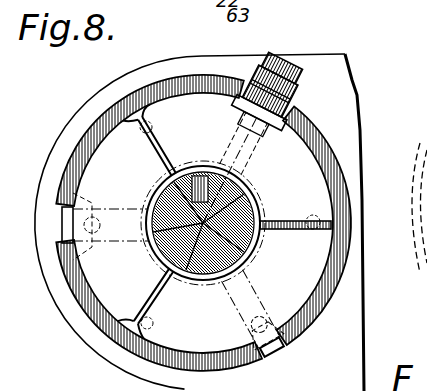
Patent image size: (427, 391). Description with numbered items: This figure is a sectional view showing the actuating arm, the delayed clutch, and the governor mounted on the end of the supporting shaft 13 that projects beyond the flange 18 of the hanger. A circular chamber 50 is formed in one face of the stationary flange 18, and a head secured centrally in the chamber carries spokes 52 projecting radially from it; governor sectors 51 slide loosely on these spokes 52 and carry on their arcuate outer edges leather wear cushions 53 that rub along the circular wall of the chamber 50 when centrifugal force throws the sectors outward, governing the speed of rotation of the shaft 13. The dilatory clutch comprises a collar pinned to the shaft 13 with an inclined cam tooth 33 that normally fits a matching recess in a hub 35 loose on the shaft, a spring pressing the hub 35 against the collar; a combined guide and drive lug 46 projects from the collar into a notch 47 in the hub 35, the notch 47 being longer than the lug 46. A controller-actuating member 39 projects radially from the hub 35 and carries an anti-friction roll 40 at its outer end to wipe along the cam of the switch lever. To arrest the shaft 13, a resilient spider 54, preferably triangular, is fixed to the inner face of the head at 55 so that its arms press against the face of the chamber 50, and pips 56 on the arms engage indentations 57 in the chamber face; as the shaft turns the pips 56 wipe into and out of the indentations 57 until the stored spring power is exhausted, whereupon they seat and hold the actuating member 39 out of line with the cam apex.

The flange 18 is at (360, 90).
The circular chamber 50 is at (348, 208).
The anti-friction roll 40 is at (303, 100).
The governor sectors 51 is at (161, 222).
The indentations 57 is at (314, 229).
The controller-actuating member 39 is at (302, 208).
The fastening of the spider 55 is at (160, 196).
The hub 35 is at (252, 236).
The supporting shaft 13 is at (157, 260).
The combined guide and drive lug 46 is at (233, 184).
The cam tooth 33 is at (186, 280).
The notch 47 is at (199, 186).
The spokes 52 is at (122, 251).
The resilient spider 54 is at (254, 266).
The pips 56 is at (268, 312).
The wear cushions 53 is at (62, 245).